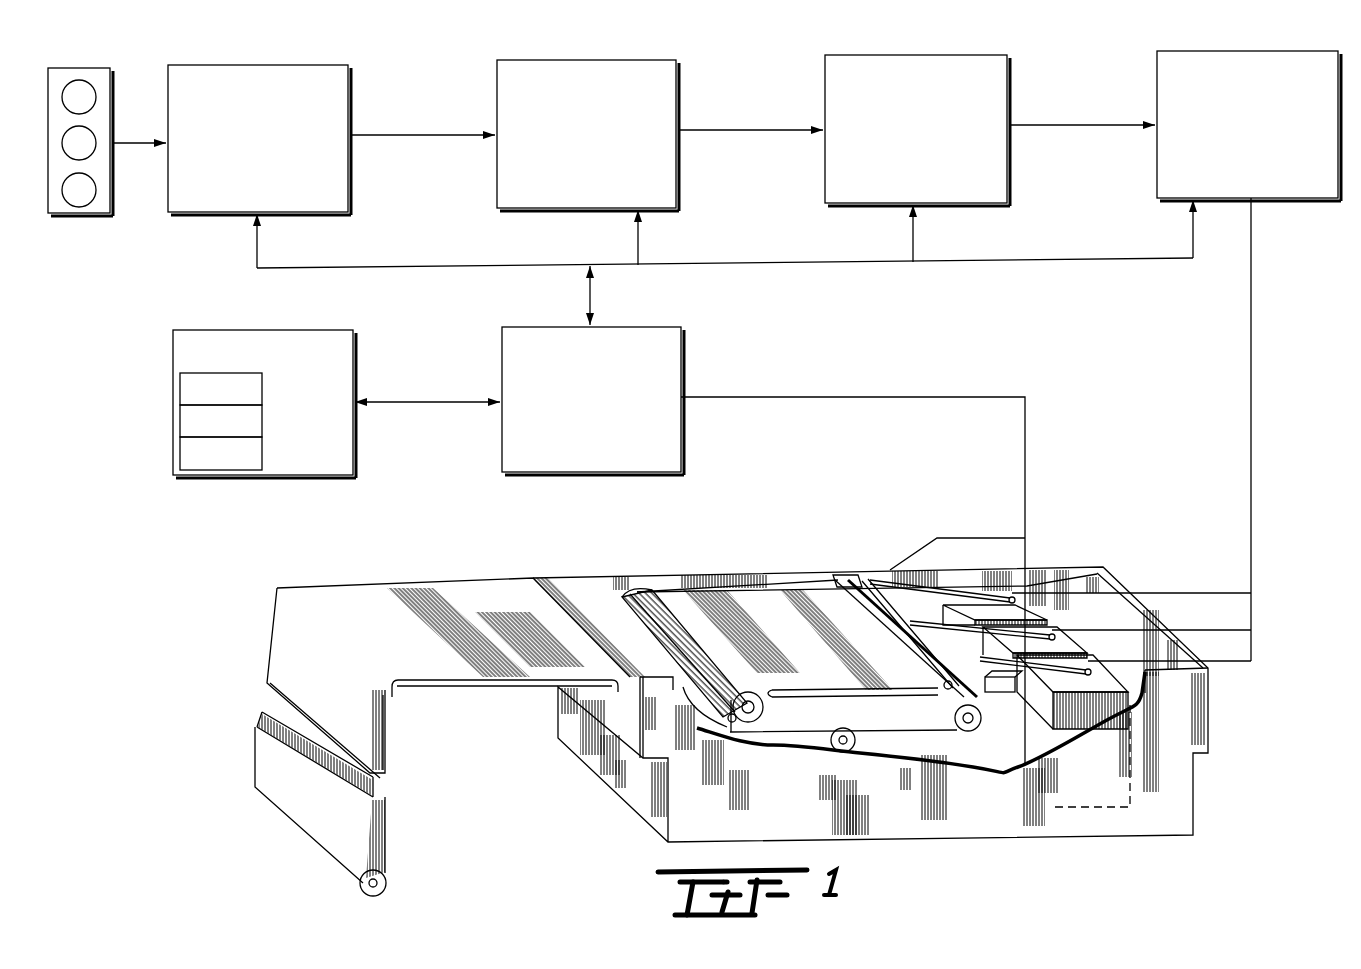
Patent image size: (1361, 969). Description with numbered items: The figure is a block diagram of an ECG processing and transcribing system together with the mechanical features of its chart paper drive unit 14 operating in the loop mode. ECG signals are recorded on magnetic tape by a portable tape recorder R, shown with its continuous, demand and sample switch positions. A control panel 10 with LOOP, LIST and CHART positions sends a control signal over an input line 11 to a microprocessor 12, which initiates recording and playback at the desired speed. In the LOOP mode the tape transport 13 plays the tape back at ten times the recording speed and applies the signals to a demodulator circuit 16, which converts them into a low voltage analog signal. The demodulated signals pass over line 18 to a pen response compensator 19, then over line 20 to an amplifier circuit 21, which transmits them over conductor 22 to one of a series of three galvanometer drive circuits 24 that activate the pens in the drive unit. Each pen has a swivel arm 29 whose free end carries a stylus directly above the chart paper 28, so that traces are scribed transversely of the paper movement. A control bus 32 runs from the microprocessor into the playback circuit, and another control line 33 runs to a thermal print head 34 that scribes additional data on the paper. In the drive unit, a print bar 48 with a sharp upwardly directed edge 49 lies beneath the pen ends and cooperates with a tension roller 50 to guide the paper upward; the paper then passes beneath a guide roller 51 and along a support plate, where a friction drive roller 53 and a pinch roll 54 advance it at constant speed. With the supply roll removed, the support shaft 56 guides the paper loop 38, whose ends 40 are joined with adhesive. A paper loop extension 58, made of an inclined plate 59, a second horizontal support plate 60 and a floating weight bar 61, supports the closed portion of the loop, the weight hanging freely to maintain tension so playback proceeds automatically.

The portable tape recorder R is at (88, 214).
The control panel 10 is at (257, 330).
The input line 11 is at (408, 400).
The microprocessor 12 is at (683, 338).
The tape transport 13 is at (258, 65).
The chart paper drive unit 14 is at (1222, 720).
The demodulator circuit 16 is at (588, 60).
The line 18 is at (734, 130).
The pen response compensator 19 is at (905, 55).
The line 20 is at (1067, 125).
The amplifier circuit 21 is at (1240, 51).
The conductor 22 is at (1251, 395).
The galvanometer drive circuits 24 is at (1107, 707).
The chart paper 28 is at (407, 585).
The swivel arm 29 is at (965, 596).
The control bus 32 is at (672, 266).
The control line 33 is at (815, 397).
The thermal print head 34 is at (872, 577).
The paper loop 38 is at (757, 730).
The ends of the paper loop 40 is at (277, 740).
The print bar 48 is at (927, 708).
The upwardly directed edge 49 is at (943, 683).
The tension roller 50 is at (962, 727).
The guide roller 51 is at (832, 577).
The friction drive roller 53 is at (770, 721).
The pinch roll 54 is at (728, 730).
The support shaft 56 is at (860, 750).
The paper loop extension 58 is at (441, 702).
The inclined plate 59 is at (697, 710).
The support plate 60 is at (490, 690).
The floating weight bar 61 is at (387, 880).